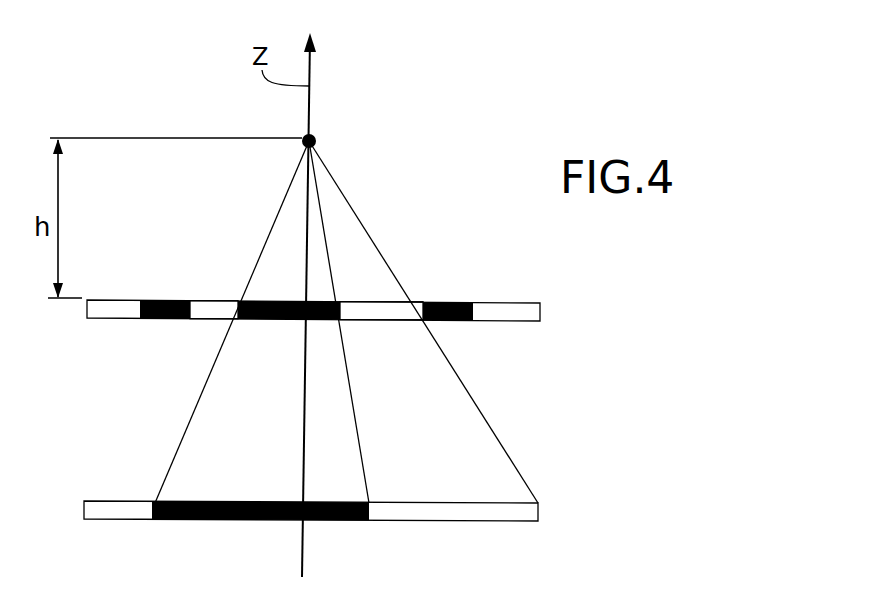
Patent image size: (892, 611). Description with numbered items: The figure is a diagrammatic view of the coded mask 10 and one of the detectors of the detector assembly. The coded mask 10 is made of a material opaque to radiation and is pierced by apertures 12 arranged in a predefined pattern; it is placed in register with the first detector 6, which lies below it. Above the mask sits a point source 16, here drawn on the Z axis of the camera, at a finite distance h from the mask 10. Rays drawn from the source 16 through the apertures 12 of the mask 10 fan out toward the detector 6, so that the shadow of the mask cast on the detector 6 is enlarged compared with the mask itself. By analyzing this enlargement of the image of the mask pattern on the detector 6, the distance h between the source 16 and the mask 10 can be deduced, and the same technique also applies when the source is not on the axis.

The first detector 6 is at (543, 511).
The coded mask 10 is at (546, 312).
The apertures 12 is at (220, 307).
The source 16 is at (316, 139).